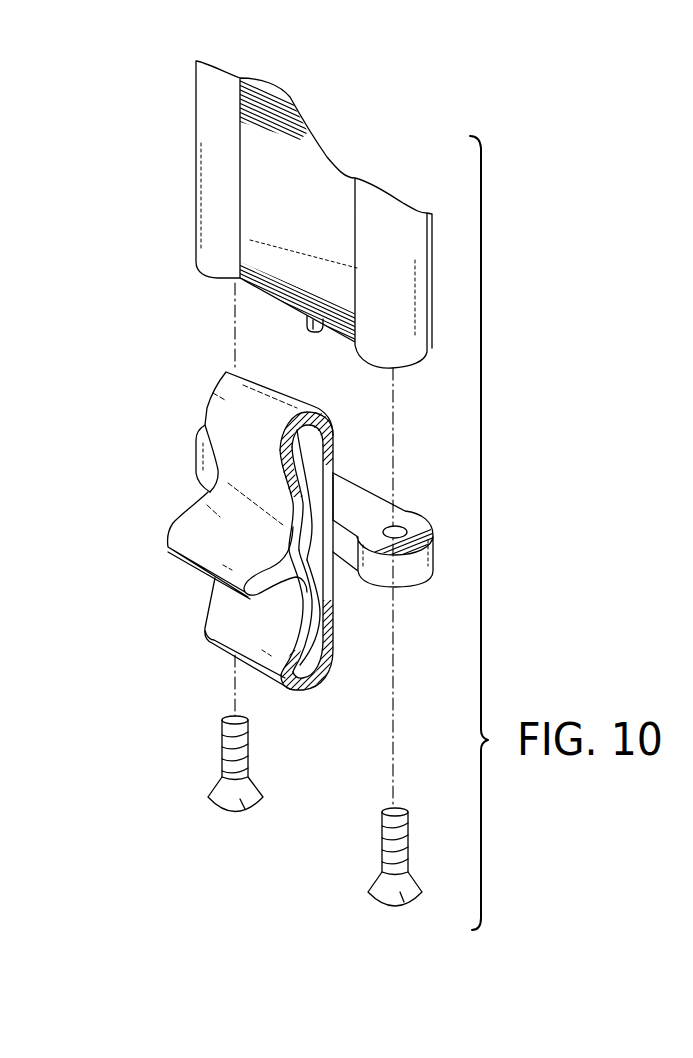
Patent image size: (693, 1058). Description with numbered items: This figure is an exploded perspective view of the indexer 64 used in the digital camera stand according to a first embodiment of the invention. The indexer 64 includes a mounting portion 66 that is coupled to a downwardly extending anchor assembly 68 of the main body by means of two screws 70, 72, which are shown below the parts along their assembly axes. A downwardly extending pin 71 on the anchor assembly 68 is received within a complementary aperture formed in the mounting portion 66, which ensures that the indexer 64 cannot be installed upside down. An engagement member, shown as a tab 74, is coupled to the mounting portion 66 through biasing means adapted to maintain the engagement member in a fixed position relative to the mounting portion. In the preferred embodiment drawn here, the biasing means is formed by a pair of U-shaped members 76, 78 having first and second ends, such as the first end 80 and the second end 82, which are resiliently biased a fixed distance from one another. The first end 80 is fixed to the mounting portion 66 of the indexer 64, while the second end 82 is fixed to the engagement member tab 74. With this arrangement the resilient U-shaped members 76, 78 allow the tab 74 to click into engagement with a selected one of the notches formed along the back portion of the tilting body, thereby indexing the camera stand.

The indexer 64 is at (127, 310).
The mounting portion 66 is at (416, 513).
The anchor assembly 68 is at (195, 143).
The screw 70 is at (382, 840).
The pin 71 is at (310, 332).
The screw 72 is at (222, 742).
The tab 74 is at (190, 566).
The U-shaped member 76 is at (268, 383).
The U-shaped member 78 is at (310, 682).
The first end 80 is at (333, 512).
The second end 82 is at (213, 502).